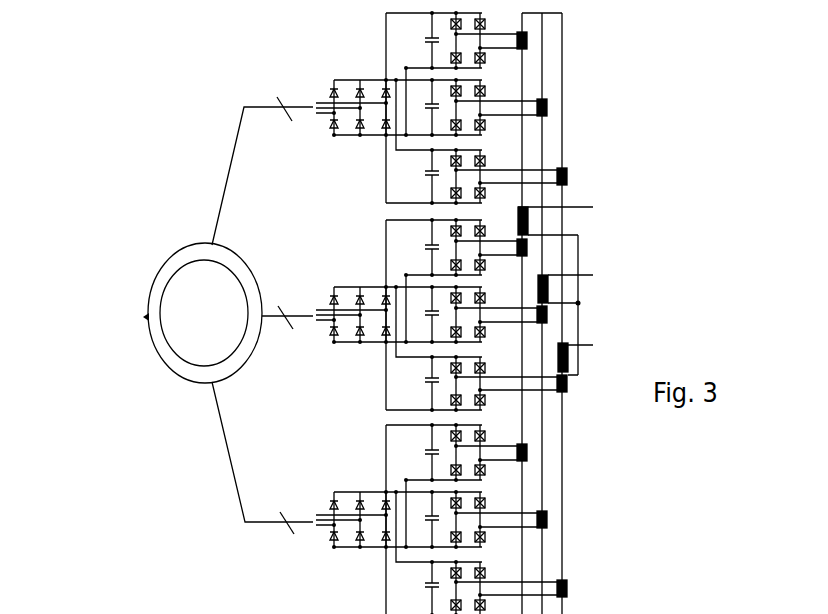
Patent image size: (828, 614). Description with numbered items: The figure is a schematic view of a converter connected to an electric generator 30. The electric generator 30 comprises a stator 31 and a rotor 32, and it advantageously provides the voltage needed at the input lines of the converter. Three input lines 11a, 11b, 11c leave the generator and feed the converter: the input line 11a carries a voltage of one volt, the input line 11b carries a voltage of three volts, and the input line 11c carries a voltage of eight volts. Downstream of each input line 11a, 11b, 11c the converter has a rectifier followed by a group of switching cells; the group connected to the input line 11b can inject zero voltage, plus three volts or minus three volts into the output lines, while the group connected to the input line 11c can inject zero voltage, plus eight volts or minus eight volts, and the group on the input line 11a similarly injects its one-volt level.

The electric generator 30 is at (116, 126).
The stator 31 is at (156, 277).
The rotor 32 is at (219, 324).
The input line 11a is at (223, 193).
The input line 11b is at (263, 318).
The input line 11c is at (232, 458).